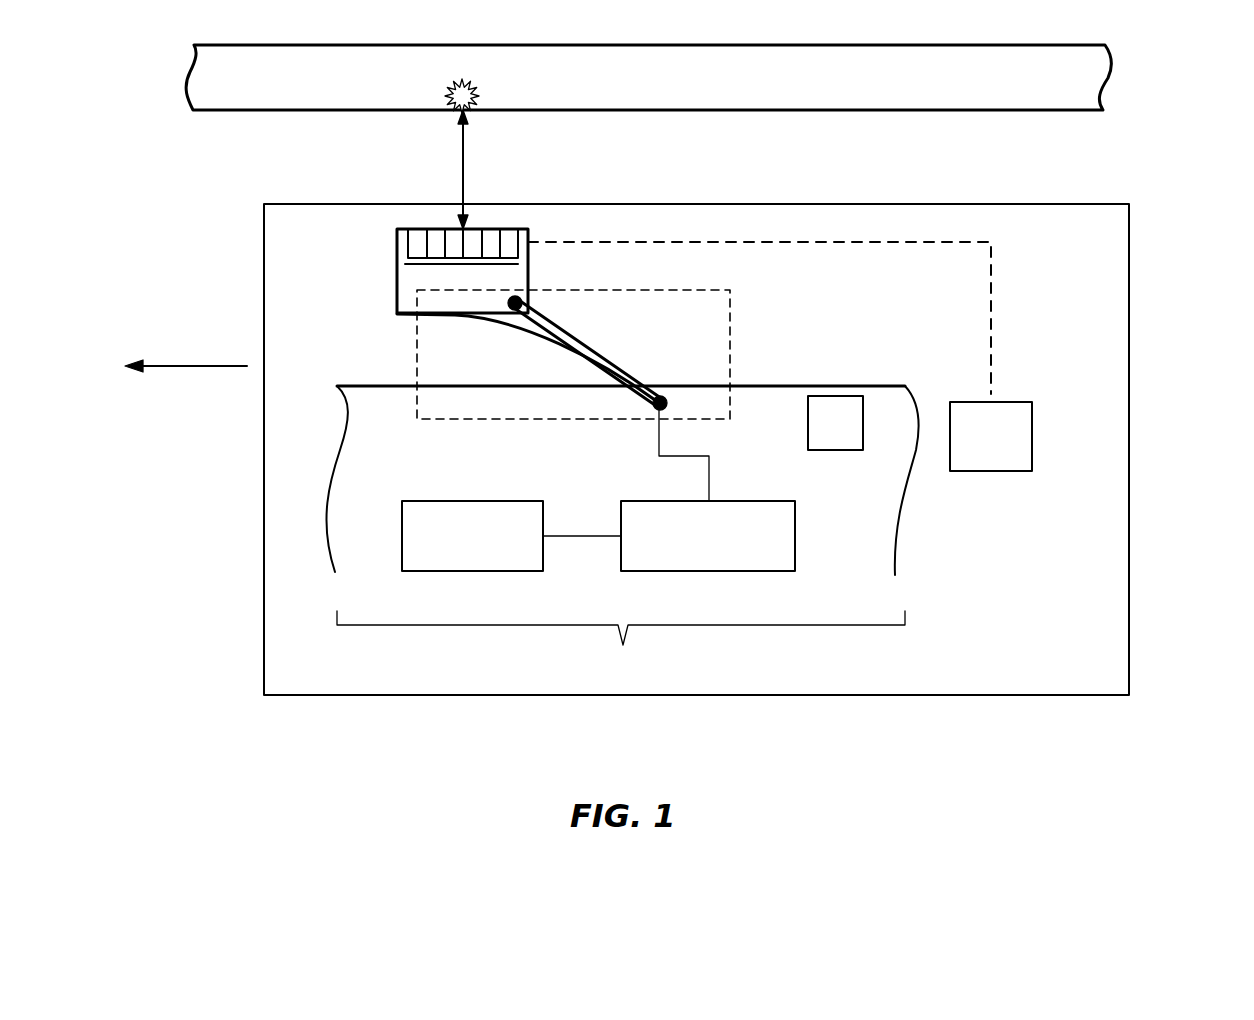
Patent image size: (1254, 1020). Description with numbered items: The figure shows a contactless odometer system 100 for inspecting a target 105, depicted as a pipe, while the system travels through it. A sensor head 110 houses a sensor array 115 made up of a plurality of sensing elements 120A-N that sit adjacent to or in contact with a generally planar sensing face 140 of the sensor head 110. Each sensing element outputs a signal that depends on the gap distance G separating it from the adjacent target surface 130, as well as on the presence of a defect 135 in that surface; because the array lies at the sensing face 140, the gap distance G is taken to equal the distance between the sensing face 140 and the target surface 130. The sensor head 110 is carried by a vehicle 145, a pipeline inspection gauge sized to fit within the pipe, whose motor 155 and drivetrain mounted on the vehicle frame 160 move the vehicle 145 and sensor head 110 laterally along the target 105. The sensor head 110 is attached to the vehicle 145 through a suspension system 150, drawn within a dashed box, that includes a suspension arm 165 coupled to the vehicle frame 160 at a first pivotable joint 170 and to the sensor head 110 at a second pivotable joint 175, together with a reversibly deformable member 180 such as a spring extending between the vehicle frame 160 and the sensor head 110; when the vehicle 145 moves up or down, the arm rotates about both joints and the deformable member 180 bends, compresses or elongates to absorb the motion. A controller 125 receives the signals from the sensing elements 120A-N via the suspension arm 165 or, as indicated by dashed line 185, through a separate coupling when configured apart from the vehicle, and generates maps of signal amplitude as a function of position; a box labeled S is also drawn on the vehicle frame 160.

The contactless odometer system 100 is at (1118, 204).
The target 105 is at (648, 77).
The sensor head 110 is at (397, 287).
The sensor array 115 is at (408, 250).
The sensing elements 120A-N is at (462, 266).
The controller 125 is at (826, 486).
The target surface 130 is at (455, 113).
The defect 135 is at (450, 90).
The sensing face 140 is at (495, 229).
The vehicle 145 is at (190, 366).
The suspension system 150 is at (730, 308).
The motor 155 is at (511, 536).
The vehicle frame 160 is at (622, 480).
The suspension arm 165 is at (585, 340).
The first pivotable joint 170 is at (665, 396).
The second pivotable joint 175 is at (522, 300).
The reversibly deformable member 180 is at (525, 338).
The dashed line 185 is at (991, 330).
The gap distance G is at (464, 138).
The sensor S is at (835, 423).